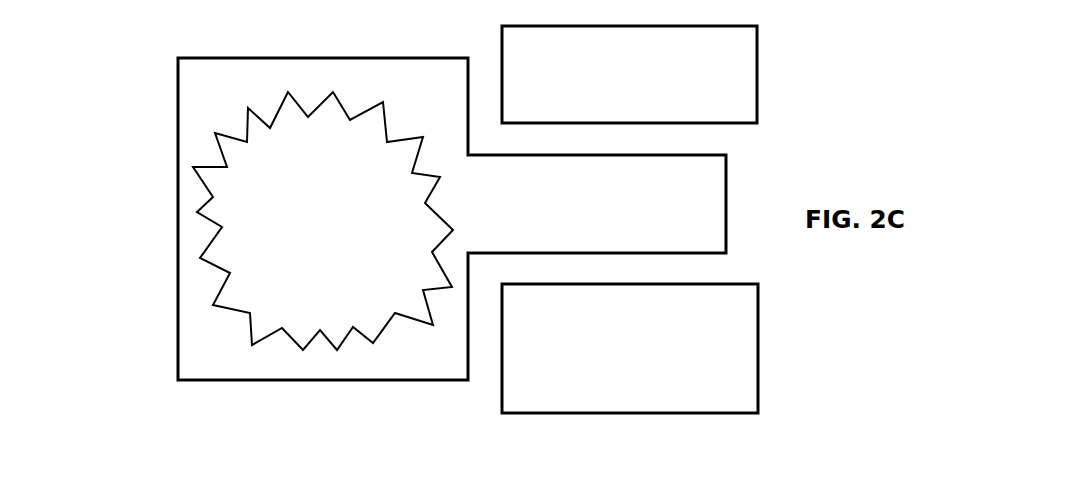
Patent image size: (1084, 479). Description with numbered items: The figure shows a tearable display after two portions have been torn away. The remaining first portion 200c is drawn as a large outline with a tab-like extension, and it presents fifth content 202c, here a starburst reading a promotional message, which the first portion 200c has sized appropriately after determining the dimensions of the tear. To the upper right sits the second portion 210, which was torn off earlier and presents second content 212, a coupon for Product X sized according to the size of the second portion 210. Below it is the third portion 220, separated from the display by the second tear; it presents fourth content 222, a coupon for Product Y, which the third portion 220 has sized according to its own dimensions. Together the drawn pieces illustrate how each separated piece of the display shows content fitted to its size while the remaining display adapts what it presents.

The first portion 200c is at (203, 36).
The fifth content 202c is at (195, 196).
The second portion 210 is at (674, 68).
The second content 212 is at (740, 96).
The third portion 220 is at (674, 343).
The fourth content 222 is at (731, 368).